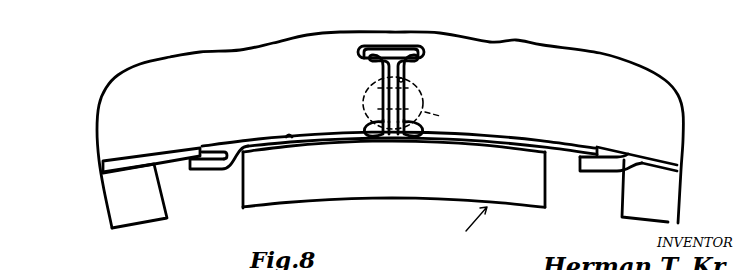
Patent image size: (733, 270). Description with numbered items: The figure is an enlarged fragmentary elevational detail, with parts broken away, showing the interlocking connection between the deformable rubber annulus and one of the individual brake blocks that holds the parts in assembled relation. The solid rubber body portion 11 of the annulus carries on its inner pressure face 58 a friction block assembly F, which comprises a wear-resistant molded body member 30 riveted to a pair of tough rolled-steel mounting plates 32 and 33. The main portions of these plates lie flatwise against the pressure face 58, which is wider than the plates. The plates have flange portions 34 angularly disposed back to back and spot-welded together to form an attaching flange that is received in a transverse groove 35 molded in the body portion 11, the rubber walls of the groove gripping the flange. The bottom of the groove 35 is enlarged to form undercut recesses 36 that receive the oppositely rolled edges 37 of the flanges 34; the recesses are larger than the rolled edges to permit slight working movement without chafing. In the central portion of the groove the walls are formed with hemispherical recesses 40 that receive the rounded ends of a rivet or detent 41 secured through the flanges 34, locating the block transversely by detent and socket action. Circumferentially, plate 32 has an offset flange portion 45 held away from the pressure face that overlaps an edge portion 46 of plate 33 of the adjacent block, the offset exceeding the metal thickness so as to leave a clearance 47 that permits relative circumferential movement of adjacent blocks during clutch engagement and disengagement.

The body portion 11 is at (543, 106).
The body member 30 is at (140, 214).
The mounting plate 32 is at (265, 152).
The mounting plate 33 is at (120, 154).
The flange portions 34 is at (376, 136).
The transverse slot or groove 35 is at (403, 80).
The undercut recesses 36 is at (362, 54).
The rolled edges 37 is at (377, 56).
The hemispherical recesses 40 is at (373, 104).
The rivet or detent 41 is at (449, 119).
The offset flange portion 45 is at (207, 170).
The edge portion 46 is at (198, 148).
The clearance 47 is at (192, 161).
The inner pressure face 58 is at (289, 136).
The friction block assembly F is at (464, 233).